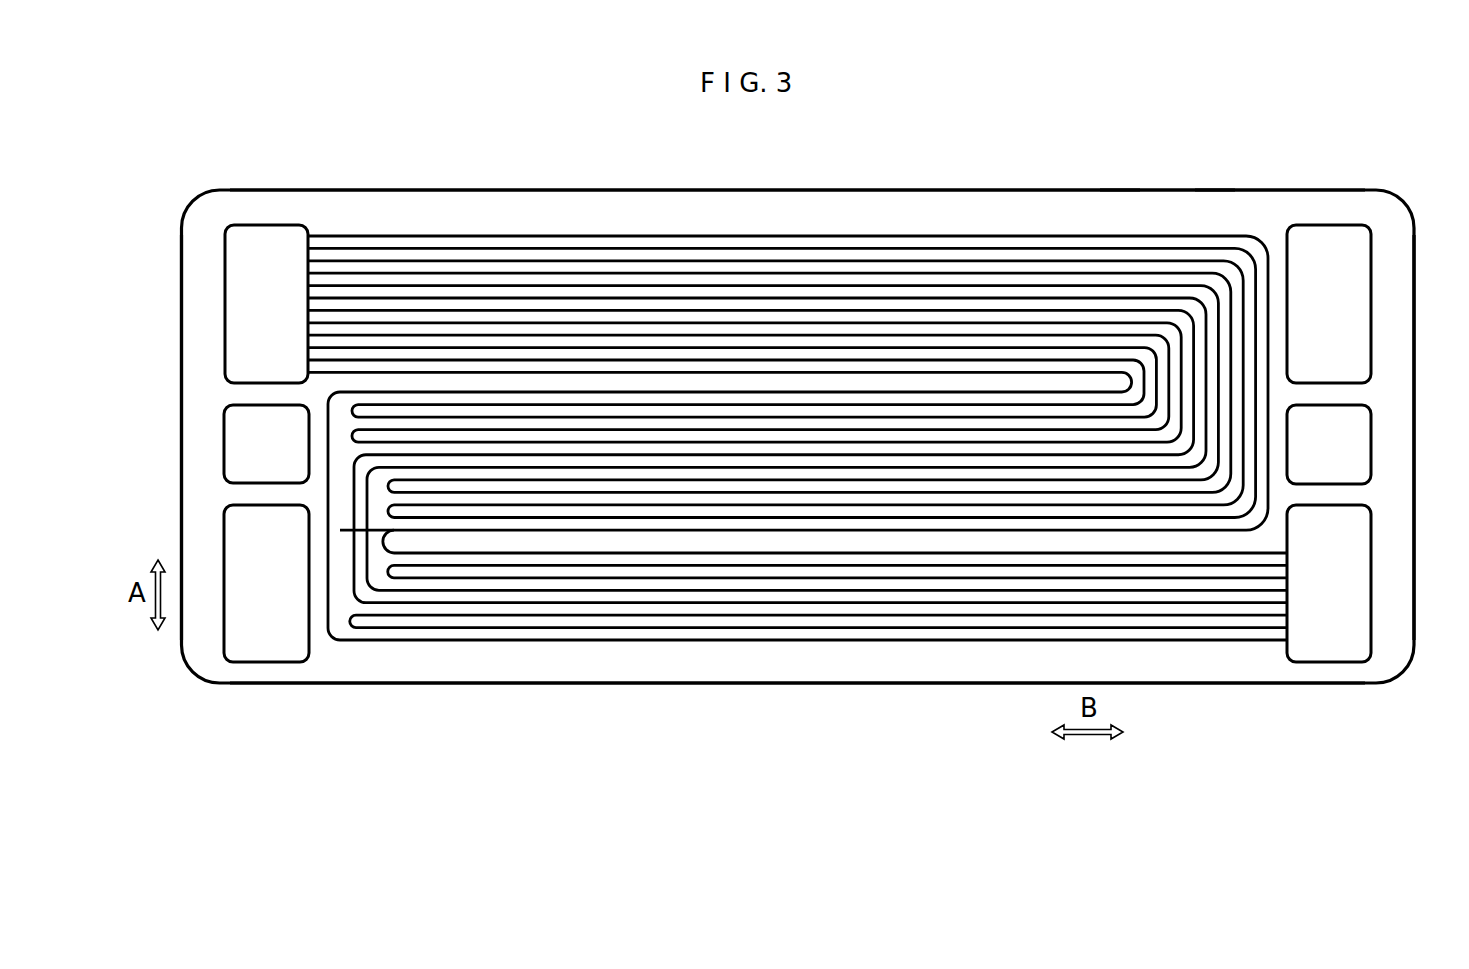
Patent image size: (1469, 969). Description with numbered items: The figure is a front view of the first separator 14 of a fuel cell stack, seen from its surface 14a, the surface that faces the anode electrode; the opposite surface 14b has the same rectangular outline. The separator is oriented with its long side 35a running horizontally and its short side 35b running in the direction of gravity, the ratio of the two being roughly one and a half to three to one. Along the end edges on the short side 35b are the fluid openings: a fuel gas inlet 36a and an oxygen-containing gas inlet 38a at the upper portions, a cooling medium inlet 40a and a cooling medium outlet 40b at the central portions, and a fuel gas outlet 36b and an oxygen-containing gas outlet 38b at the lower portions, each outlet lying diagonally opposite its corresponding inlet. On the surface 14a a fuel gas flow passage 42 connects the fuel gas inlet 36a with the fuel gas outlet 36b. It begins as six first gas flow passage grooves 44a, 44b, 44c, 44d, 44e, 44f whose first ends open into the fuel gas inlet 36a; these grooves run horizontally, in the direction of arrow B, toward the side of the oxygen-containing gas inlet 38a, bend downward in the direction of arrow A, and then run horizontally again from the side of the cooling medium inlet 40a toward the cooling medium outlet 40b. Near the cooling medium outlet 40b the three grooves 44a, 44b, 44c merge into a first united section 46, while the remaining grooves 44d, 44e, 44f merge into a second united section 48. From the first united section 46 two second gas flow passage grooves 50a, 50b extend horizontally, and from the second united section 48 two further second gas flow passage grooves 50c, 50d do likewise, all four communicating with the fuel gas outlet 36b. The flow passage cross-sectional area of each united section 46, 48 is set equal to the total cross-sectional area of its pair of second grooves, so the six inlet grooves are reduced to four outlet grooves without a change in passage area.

The first separator 14 is at (927, 175).
The surface 14a is at (1120, 203).
The surface 14b is at (1213, 192).
The long side 35a is at (998, 190).
The short side 35b is at (181, 403).
The fuel gas inlet 36a is at (275, 318).
The fuel gas outlet 36b is at (1336, 598).
The oxygen-containing gas inlet 38a is at (1336, 313).
The oxygen-containing gas outlet 38b is at (275, 607).
The cooling medium inlet 40a is at (1336, 465).
The cooling medium outlet 40b is at (275, 467).
The fuel gas flow passage 42 is at (707, 434).
The first gas flow passage groove 44a is at (383, 238).
The first gas flow passage groove 44b is at (457, 263).
The first gas flow passage groove 44c is at (533, 289).
The first gas flow passage groove 44d is at (616, 315).
The first gas flow passage groove 44e is at (700, 340).
The first gas flow passage groove 44f is at (795, 365).
The first united section 46 is at (378, 548).
The second united section 48 is at (342, 495).
The second gas flow passage groove 50a is at (583, 558).
The second gas flow passage groove 50b is at (665, 585).
The second gas flow passage groove 50c is at (748, 611).
The second gas flow passage groove 50d is at (843, 636).